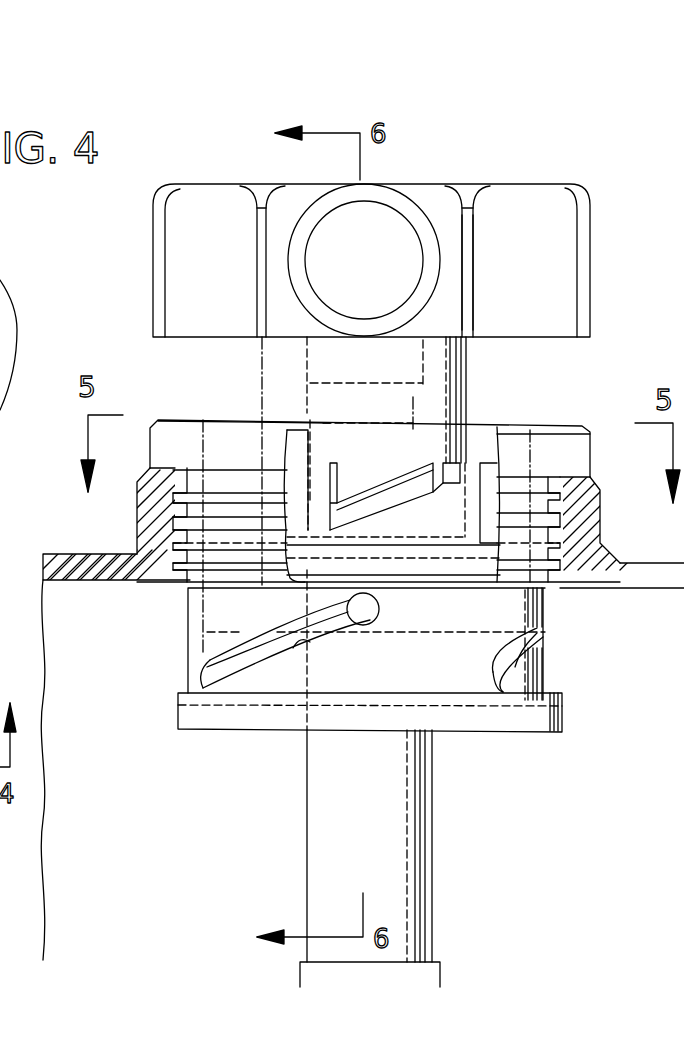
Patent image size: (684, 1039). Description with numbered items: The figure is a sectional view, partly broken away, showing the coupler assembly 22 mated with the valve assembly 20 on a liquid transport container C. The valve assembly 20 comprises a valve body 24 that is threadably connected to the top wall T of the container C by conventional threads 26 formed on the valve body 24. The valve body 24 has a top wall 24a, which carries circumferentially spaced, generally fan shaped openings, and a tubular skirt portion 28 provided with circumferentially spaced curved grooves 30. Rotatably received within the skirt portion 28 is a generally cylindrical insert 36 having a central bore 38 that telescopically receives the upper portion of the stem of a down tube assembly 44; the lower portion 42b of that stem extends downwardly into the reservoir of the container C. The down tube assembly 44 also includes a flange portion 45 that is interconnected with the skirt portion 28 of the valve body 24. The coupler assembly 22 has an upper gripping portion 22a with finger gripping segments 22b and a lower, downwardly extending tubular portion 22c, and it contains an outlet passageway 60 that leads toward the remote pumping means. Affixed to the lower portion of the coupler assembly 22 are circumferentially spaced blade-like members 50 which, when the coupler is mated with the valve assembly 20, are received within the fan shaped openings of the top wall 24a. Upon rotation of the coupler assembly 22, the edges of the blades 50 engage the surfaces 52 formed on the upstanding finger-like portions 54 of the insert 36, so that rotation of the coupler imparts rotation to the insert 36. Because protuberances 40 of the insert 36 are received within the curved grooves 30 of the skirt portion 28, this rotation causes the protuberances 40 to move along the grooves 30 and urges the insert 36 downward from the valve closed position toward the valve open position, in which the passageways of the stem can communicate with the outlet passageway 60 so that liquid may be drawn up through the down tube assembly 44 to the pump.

The valve assembly 20 is at (557, 601).
The coupler assembly 22 is at (602, 204).
The upper gripping portion 22a is at (472, 185).
The finger gripping segments / lower tubular portion 22b is at (542, 257).
The knob shaft 22c is at (470, 357).
The valve body 24 is at (569, 418).
The top wall of valve body 24a is at (227, 421).
The threads 26 is at (186, 543).
The skirt portion 28 is at (184, 638).
The curved grooves 30 is at (312, 640).
The insert 36 is at (473, 459).
The central bore 38 is at (307, 678).
The protuberances 40 is at (380, 611).
The lower portion of stem 42b is at (320, 858).
The down tube assembly 44 is at (224, 732).
The flange portion 45 is at (537, 730).
The blade-like members 50 is at (377, 500).
The surfaces 52 is at (335, 478).
The finger-like portions 54 is at (305, 445).
The outlet passageway 60 is at (311, 275).
The top wall T is at (665, 560).
The container C is at (600, 867).